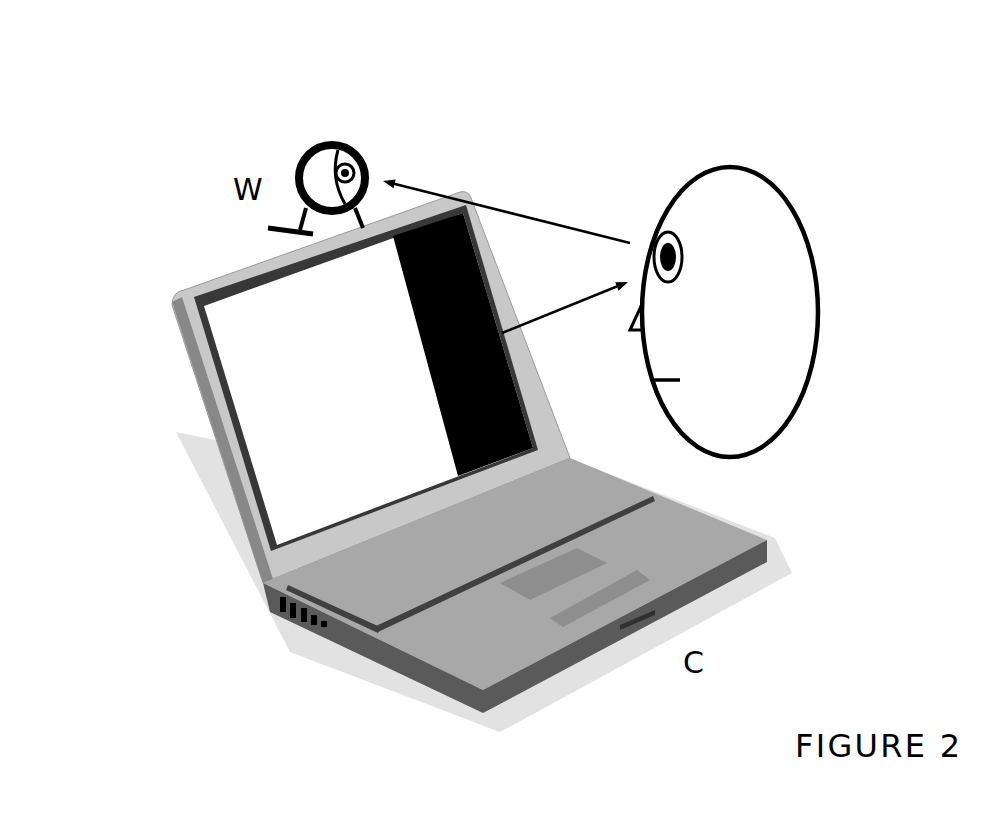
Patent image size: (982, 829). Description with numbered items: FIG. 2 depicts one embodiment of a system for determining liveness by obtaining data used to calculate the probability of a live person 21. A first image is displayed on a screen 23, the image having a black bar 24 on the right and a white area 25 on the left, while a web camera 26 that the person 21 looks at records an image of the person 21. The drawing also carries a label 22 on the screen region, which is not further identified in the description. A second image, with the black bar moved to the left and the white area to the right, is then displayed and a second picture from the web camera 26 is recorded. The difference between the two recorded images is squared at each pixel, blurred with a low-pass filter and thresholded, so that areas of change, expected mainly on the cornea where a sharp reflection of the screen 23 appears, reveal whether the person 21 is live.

The live person 21 is at (818, 257).
The display screen 22 is at (370, 369).
The screen 23 is at (208, 290).
The black bar 24 is at (473, 252).
The white area 25 is at (228, 327).
The web camera 26 is at (332, 145).